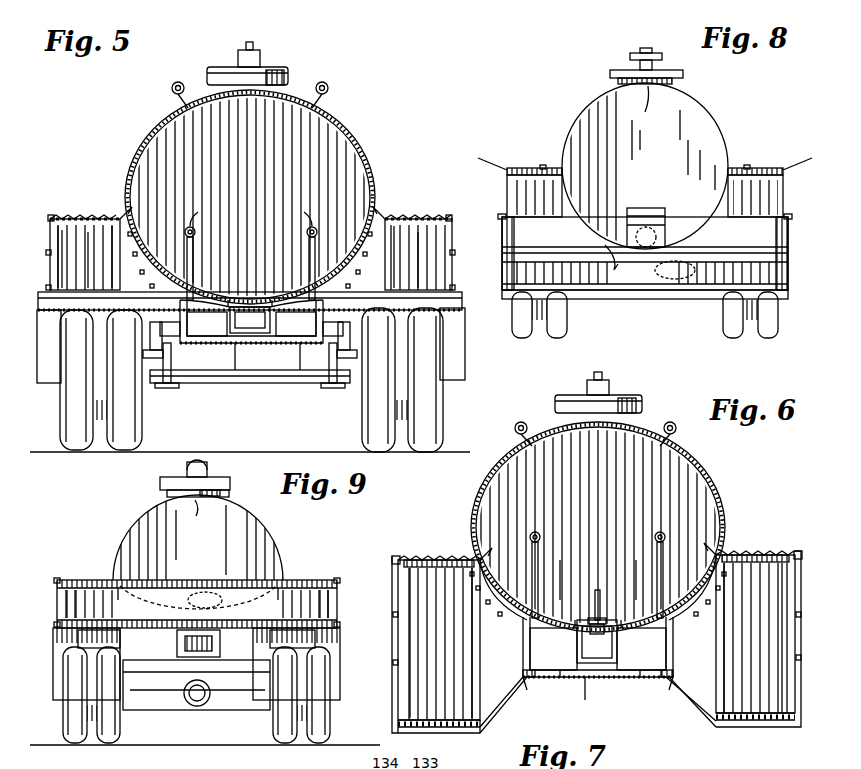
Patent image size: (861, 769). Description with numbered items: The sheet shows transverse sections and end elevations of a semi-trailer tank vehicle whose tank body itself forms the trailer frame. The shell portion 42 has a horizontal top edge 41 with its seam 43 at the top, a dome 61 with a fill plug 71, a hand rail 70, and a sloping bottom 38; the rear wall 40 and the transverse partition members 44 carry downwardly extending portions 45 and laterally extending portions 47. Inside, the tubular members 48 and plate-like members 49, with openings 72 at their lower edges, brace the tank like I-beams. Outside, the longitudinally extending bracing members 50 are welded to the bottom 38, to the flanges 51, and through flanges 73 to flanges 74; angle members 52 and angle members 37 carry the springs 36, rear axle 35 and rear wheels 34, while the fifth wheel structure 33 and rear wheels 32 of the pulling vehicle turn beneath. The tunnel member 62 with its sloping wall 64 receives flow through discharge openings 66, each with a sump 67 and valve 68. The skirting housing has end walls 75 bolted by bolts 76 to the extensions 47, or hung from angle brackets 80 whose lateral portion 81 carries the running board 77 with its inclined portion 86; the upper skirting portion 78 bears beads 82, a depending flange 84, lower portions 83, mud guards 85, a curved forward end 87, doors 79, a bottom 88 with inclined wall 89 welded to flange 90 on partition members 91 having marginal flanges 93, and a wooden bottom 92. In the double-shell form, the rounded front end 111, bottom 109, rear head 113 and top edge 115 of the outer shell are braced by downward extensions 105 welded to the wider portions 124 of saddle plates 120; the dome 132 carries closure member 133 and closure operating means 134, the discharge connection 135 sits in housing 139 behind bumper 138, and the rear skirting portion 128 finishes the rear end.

In FIG. 9, the rear wheels 32 is at (80, 744).
In FIG. 9, the fifth wheel structure 33 is at (212, 644).
In FIG. 5, the rear wheels 34 is at (64, 426).
In FIG. 8, the rear wheels 34 is at (514, 316).
In FIG. 5, the rear axle 35 is at (245, 384).
In FIG. 8, the rear axle 35 is at (656, 288).
In FIG. 5, the springs 36 is at (168, 388).
In FIG. 5, the angle members 37 is at (150, 330).
In FIG. 5, the bottom 38 is at (232, 298).
In FIG. 6, the bottom 38 is at (628, 622).
In FIG. 5, the rear wall 40 is at (318, 140).
In FIG. 5, the top edge 41 is at (207, 72).
In FIG. 6, the top edge 41 is at (556, 408).
In FIG. 5, the shell portion 42 is at (340, 138).
In FIG. 6, the shell portion 42 is at (498, 478).
In FIG. 5, the seam 43 is at (262, 60).
In FIG. 6, the seam 43 is at (612, 400).
In FIG. 6, the partition members 44 is at (680, 486).
In FIG. 5, the downwardly extending portions 45 is at (296, 346).
In FIG. 6, the downwardly extending portions 45 is at (566, 674).
In FIG. 5, the laterally extending portions 47 is at (184, 232).
In FIG. 5, the tubular members 48 is at (196, 214).
In FIG. 6, the tubular members 48 is at (542, 530).
In FIG. 5, the plate-like members 49 is at (194, 258).
In FIG. 6, the plate-like members 49 is at (540, 567).
In FIG. 5, the longitudinally extending bracing members 50 is at (188, 298).
In FIG. 6, the longitudinally extending bracing members 50 is at (524, 632).
In FIG. 5, the flanges 51 is at (192, 320).
In FIG. 6, the flanges 51 is at (566, 646).
In FIG. 5, the angle members 52 is at (194, 348).
In FIG. 6, the angle members 52 is at (528, 686).
In FIG. 5, the domes 61 is at (288, 74).
In FIG. 6, the domes 61 is at (578, 398).
In FIG. 5, the tunnel member 62 is at (252, 310).
In FIG. 6, the tunnel member 62 is at (580, 622).
In FIG. 5, the sloping bottom wall 64 is at (240, 346).
In FIG. 6, the sloping bottom wall 64 is at (588, 682).
In FIG. 6, the discharge openings 66 is at (594, 597).
In FIG. 6, the sump 67 is at (606, 618).
In FIG. 6, the valves 68 is at (602, 640).
In FIG. 5, the hand rail 70 is at (171, 88).
In FIG. 6, the hand rail 70 is at (516, 424).
In FIG. 5, the fill plugs 71 is at (243, 50).
In FIG. 6, the fill plugs 71 is at (604, 376).
In FIG. 6, the openings 72 is at (522, 605).
In FIG. 5, the flanges 73 is at (182, 330).
In FIG. 6, the flanges 73 is at (538, 680).
In FIG. 5, the flanges 74 is at (236, 345).
In FIG. 6, the flanges 74 is at (614, 682).
In FIG. 5, the end walls 75 is at (60, 250).
In FIG. 5, the bolts 76 is at (134, 228).
In FIG. 6, the bolts 76 is at (476, 596).
In FIG. 5, the running board 77 is at (88, 215).
In FIG. 8, the running board 77 is at (540, 168).
In FIG. 9, the running board 77 is at (90, 580).
In FIG. 6, the running board 77 is at (428, 558).
In FIG. 5, the upper skirting portion 78 is at (70, 262).
In FIG. 8, the upper skirting portion 78 is at (510, 186).
In FIG. 9, the upper skirting portion 78 is at (58, 600).
In FIG. 6, the upper skirting portion 78 is at (398, 580).
In FIG. 6, the doors 79 is at (404, 660).
In FIG. 6, the angle brackets 80 is at (490, 608).
In FIG. 6, the laterally extending portion 81 is at (452, 580).
In FIG. 5, the beads 82 is at (50, 217).
In FIG. 8, the beads 82 is at (792, 208).
In FIG. 9, the beads 82 is at (54, 580).
In FIG. 6, the beads 82 is at (398, 556).
In FIG. 5, the lower skirting portions 83 is at (44, 300).
In FIG. 5, the depending flange 84 is at (84, 270).
In FIG. 5, the mud guards 85 is at (52, 384).
In FIG. 8, the mud guards 85 is at (514, 268).
In FIG. 9, the mud guards 85 is at (56, 676).
In FIG. 5, the upwardly inclined portion 86 is at (120, 214).
In FIG. 6, the upwardly inclined portion 86 is at (476, 556).
In FIG. 9, the curved forward end portion 87 is at (58, 611).
In FIG. 6, the bottom 88 is at (440, 735).
In FIG. 6, the inclined wall portion 89 is at (496, 706).
In FIG. 6, the flange 90 is at (470, 732).
In FIG. 6, the partition members 91 is at (394, 692).
In FIG. 6, the wooden bottom 92 is at (448, 720).
In FIG. 5, the marginal flanges 93 is at (65, 240).
In FIG. 9, the downward extensions 105 is at (124, 620).
In FIG. 8, the bottom 109 is at (675, 270).
In FIG. 9, the bottom 109 is at (205, 600).
In FIG. 9, the rounded front end 111 is at (250, 538).
In FIG. 8, the rear head 113 is at (690, 125).
In FIG. 8, the top edge 115 is at (647, 104).
In FIG. 9, the top edge 115 is at (181, 512).
In FIG. 9, the saddle plates 120 is at (256, 612).
In FIG. 9, the wider portion 124 is at (196, 639).
In FIG. 8, the rear skirting portion 128 is at (535, 160).
In FIG. 8, the dome 132 is at (672, 80).
In FIG. 9, the dome 132 is at (167, 496).
In FIG. 8, the closure member 133 is at (612, 68).
In FIG. 9, the closure member 133 is at (228, 478).
In FIG. 8, the closure operating means 134 is at (640, 52).
In FIG. 9, the closure operating means 134 is at (186, 466).
In FIG. 8, the discharge connection 135 is at (660, 225).
In FIG. 8, the bumper 138 is at (740, 250).
In FIG. 8, the housing 139 is at (627, 212).